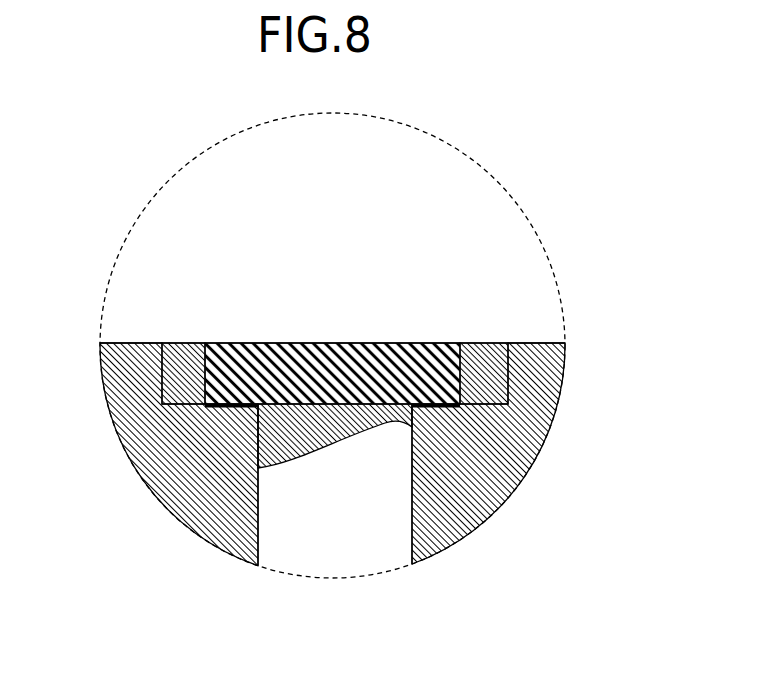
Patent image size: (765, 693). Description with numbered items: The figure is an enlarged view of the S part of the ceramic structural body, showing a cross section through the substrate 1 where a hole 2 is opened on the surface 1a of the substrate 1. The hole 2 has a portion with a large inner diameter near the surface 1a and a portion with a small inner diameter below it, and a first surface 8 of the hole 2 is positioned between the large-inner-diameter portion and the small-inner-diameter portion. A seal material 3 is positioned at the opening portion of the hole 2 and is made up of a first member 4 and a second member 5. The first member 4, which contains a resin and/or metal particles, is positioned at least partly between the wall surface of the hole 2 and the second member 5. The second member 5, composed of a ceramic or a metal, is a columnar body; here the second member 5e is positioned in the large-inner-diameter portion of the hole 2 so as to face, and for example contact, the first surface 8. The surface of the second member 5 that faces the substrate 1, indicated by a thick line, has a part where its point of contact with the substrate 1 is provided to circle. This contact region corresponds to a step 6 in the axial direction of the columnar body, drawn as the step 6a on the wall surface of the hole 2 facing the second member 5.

The substrate 1 is at (162, 427).
The surface of substrate 1a is at (550, 345).
The hole 2 is at (328, 505).
The seal material 3 is at (311, 293).
The first member 4 is at (175, 378).
The second member 5 is at (332, 326).
The second member 5e is at (186, 270).
The step 6 is at (404, 489).
The step 6a is at (415, 420).
The first surface 8 is at (473, 395).
The S part S is at (458, 150).